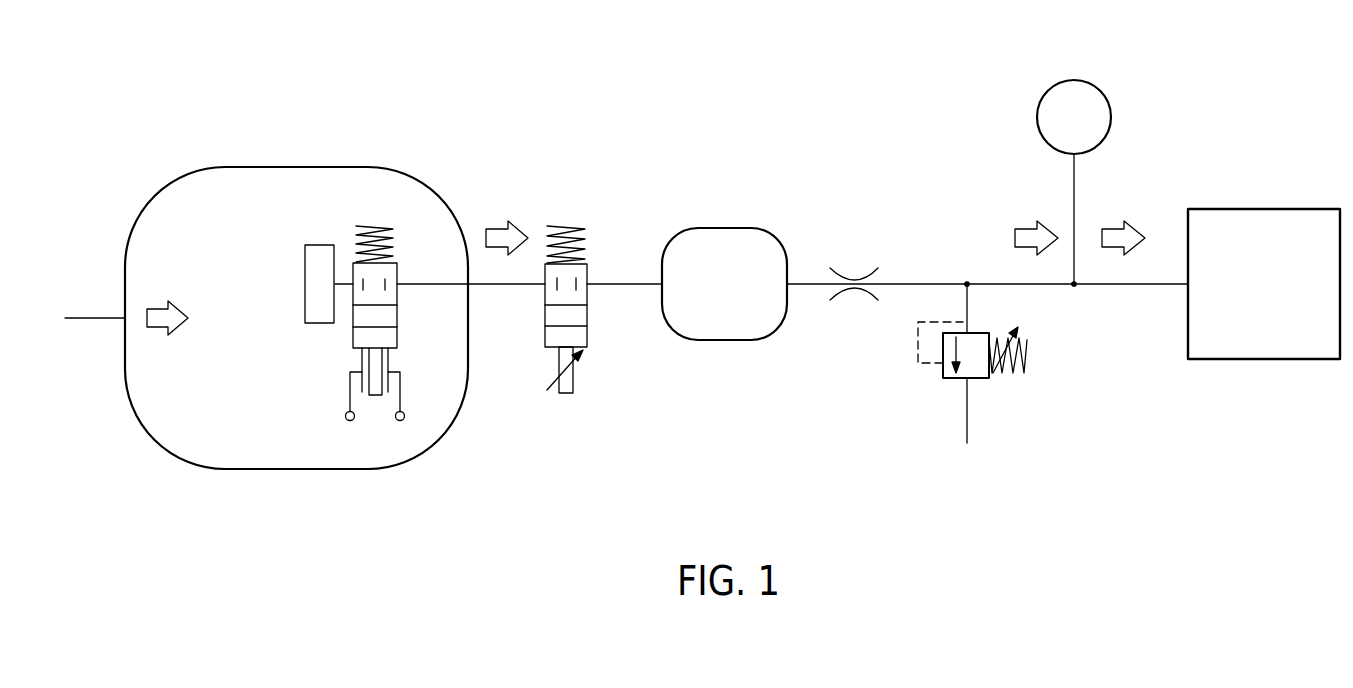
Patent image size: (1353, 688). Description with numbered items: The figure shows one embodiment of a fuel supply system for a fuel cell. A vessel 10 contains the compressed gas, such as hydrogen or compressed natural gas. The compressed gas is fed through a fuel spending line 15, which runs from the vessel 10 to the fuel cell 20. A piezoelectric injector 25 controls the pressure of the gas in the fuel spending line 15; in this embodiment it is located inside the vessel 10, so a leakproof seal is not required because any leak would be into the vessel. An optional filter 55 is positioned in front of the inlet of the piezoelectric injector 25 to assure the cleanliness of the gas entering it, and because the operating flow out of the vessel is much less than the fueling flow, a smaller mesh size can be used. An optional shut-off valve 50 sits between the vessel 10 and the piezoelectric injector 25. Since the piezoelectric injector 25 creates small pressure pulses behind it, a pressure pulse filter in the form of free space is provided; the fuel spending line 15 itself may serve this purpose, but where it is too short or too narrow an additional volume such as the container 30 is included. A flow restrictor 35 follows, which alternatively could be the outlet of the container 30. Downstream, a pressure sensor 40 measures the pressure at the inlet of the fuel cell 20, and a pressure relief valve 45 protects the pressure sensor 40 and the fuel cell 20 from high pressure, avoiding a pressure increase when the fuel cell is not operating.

The vessel 10 is at (222, 141).
The fuel spending line 15 is at (507, 285).
The fuel cell 20 is at (1268, 209).
The piezoelectric injector 25 is at (375, 225).
The container 30 is at (718, 228).
The flow restrictor 35 is at (853, 280).
The pressure sensor 40 is at (1071, 80).
The pressure relief valve 45 is at (967, 284).
The shut-off valve 50 is at (565, 226).
The filter 55 is at (320, 245).